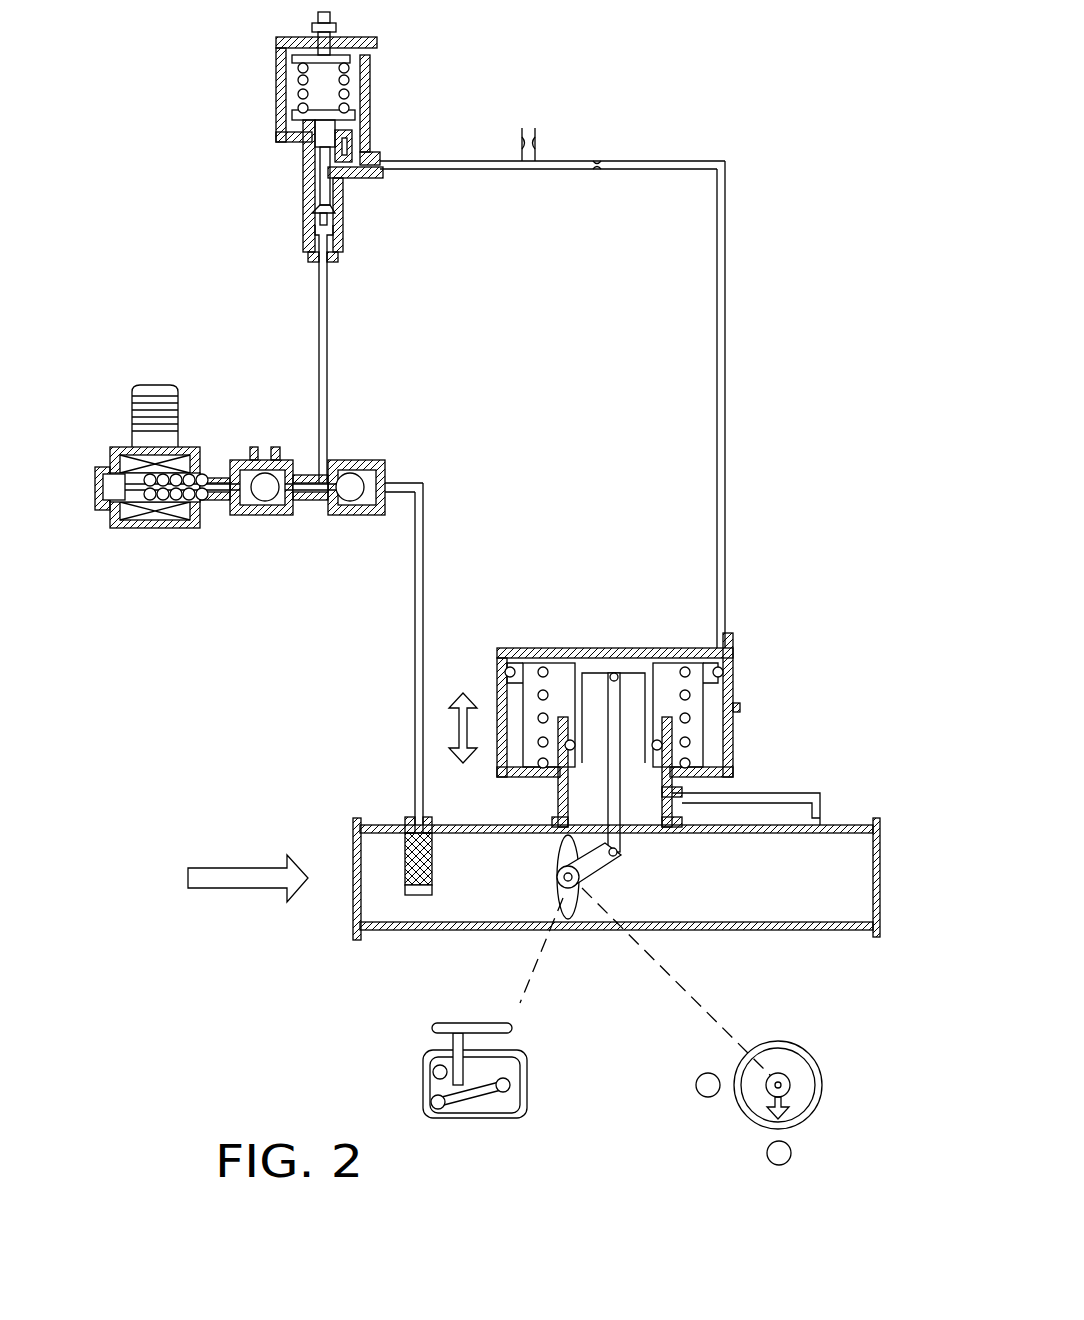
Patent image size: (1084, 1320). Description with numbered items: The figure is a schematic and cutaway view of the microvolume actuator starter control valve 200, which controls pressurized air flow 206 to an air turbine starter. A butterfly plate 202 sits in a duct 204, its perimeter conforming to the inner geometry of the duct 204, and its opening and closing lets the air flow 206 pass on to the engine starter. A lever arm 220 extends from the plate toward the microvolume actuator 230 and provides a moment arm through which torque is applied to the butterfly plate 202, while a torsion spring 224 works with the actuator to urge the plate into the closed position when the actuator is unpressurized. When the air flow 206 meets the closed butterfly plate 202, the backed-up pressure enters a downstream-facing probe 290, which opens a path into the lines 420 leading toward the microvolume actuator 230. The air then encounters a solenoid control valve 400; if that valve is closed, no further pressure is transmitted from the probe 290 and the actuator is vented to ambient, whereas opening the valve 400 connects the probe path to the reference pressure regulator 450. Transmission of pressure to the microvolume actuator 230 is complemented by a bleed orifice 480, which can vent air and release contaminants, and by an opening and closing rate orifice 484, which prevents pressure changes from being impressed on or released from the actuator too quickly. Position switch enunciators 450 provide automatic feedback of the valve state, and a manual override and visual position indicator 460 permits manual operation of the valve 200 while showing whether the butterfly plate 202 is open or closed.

The microvolume actuator starter control valve 200 is at (790, 520).
The butterfly plate 202 is at (565, 850).
The duct 204 is at (845, 888).
The pressurized air flow 206 is at (257, 868).
The lever arm 220 is at (620, 868).
The torsion spring 224 is at (590, 880).
The microvolume actuator 230 is at (750, 663).
The downstream-facing probe 290 is at (433, 862).
The solenoid control valve 400 is at (228, 372).
The lines 420 is at (725, 380).
The reference pressure regulator 450 is at (393, 97).
The manual override and visual position indicator 460 is at (790, 1042).
The bleed orifice 480 is at (525, 128).
The opening and closing rate orifice 484 is at (633, 160).